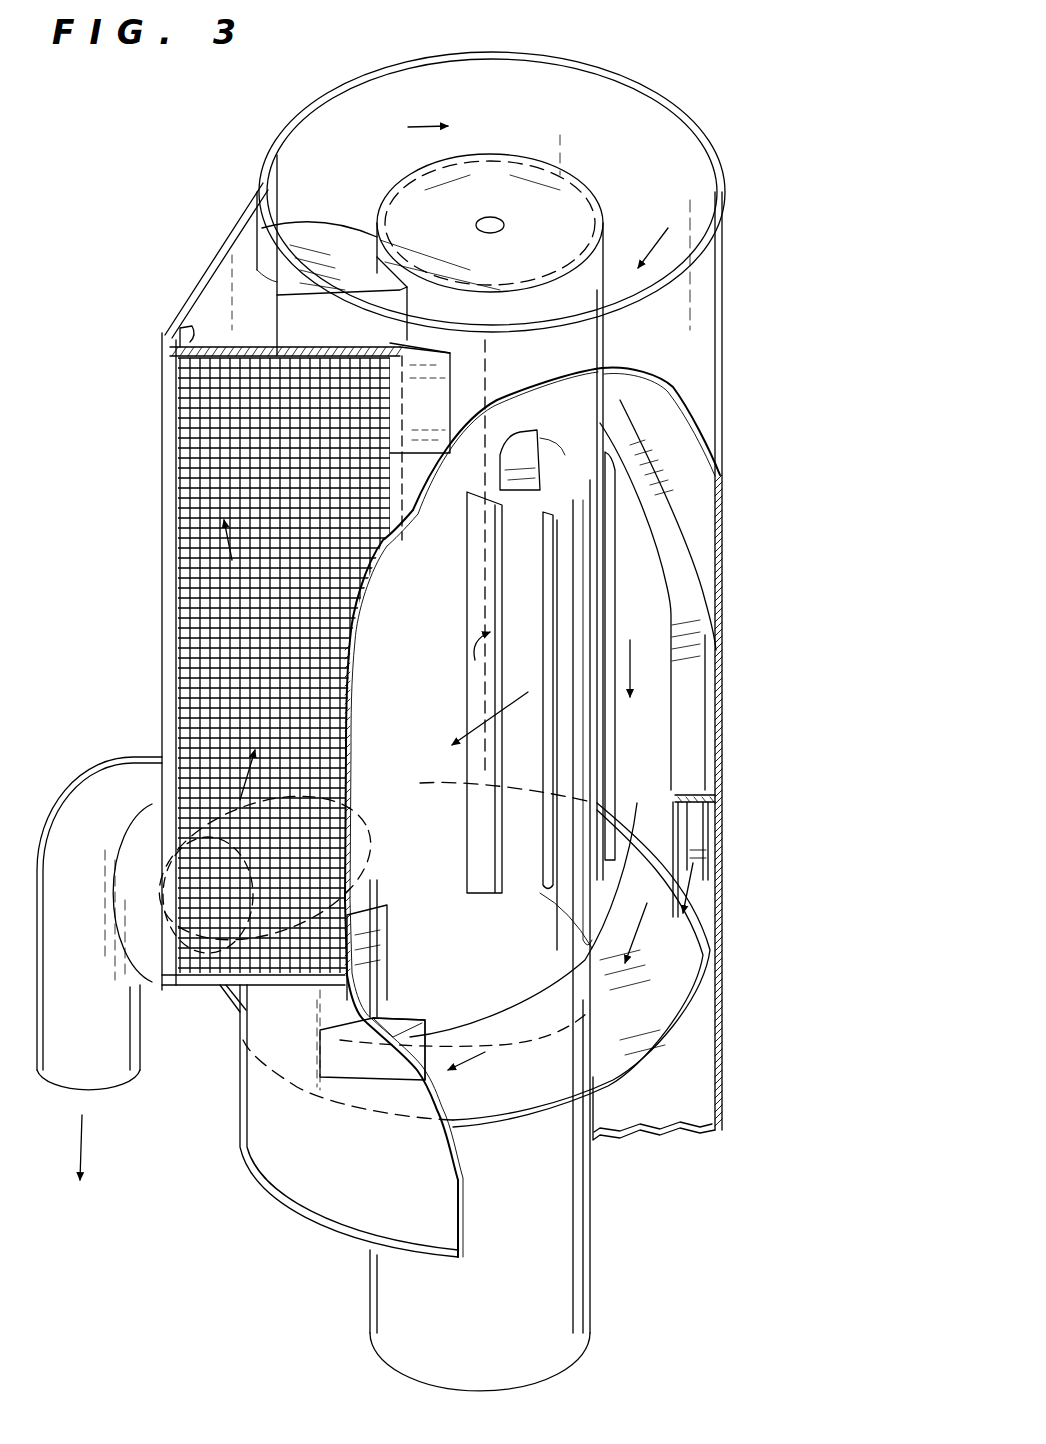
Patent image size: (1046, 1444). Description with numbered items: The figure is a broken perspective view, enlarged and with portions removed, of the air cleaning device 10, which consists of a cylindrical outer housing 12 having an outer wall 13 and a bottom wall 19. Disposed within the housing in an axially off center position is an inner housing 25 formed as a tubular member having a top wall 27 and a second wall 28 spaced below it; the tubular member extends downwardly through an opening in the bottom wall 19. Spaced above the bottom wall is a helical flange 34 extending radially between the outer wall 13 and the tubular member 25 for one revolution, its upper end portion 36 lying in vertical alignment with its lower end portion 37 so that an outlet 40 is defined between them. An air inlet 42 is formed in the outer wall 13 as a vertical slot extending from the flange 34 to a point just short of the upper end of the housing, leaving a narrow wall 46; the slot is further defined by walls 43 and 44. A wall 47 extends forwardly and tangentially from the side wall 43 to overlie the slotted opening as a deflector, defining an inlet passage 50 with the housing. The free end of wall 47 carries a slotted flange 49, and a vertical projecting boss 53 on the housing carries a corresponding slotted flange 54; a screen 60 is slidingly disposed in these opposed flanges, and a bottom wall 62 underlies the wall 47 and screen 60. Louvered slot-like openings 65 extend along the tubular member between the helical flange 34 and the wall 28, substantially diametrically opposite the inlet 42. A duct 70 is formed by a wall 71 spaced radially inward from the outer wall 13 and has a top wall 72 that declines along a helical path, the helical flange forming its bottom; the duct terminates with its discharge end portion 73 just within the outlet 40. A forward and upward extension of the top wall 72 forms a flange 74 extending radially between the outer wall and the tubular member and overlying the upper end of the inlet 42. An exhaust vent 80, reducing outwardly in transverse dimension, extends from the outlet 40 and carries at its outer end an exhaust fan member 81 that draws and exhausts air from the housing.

The air cleaning device 10 is at (748, 158).
The cylindrical outer housing 12 is at (740, 418).
The outer wall 13 is at (705, 347).
The bottom wall 19 is at (690, 1130).
The inner housing 25 is at (548, 1282).
The top wall 27 is at (543, 197).
The second wall 28 is at (515, 465).
The helical flange 34 is at (675, 973).
The upper end portion 36 is at (395, 948).
The lower end portion 37 is at (357, 1097).
The outlet 40 is at (363, 988).
The air inlet 42 is at (252, 292).
The side wall 43 is at (240, 330).
The wall 44 is at (260, 632).
The narrow wall 46 is at (255, 232).
The wall 47 is at (212, 258).
The slotted flange 49 is at (178, 328).
The inlet passage 50 is at (317, 320).
The vertical projecting boss 53 is at (435, 410).
The slotted flange 54 is at (405, 345).
The screen 60 is at (185, 722).
The bottom wall 62 is at (203, 983).
The slot-like openings 65 is at (465, 697).
The duct 70 is at (697, 830).
The wall 71 is at (688, 858).
The top wall 72 is at (700, 632).
The discharge end portion 73 is at (428, 1040).
The flange 74 is at (343, 243).
The exhaust vent 80 is at (245, 1015).
The exhaust fan member 81 is at (72, 1092).